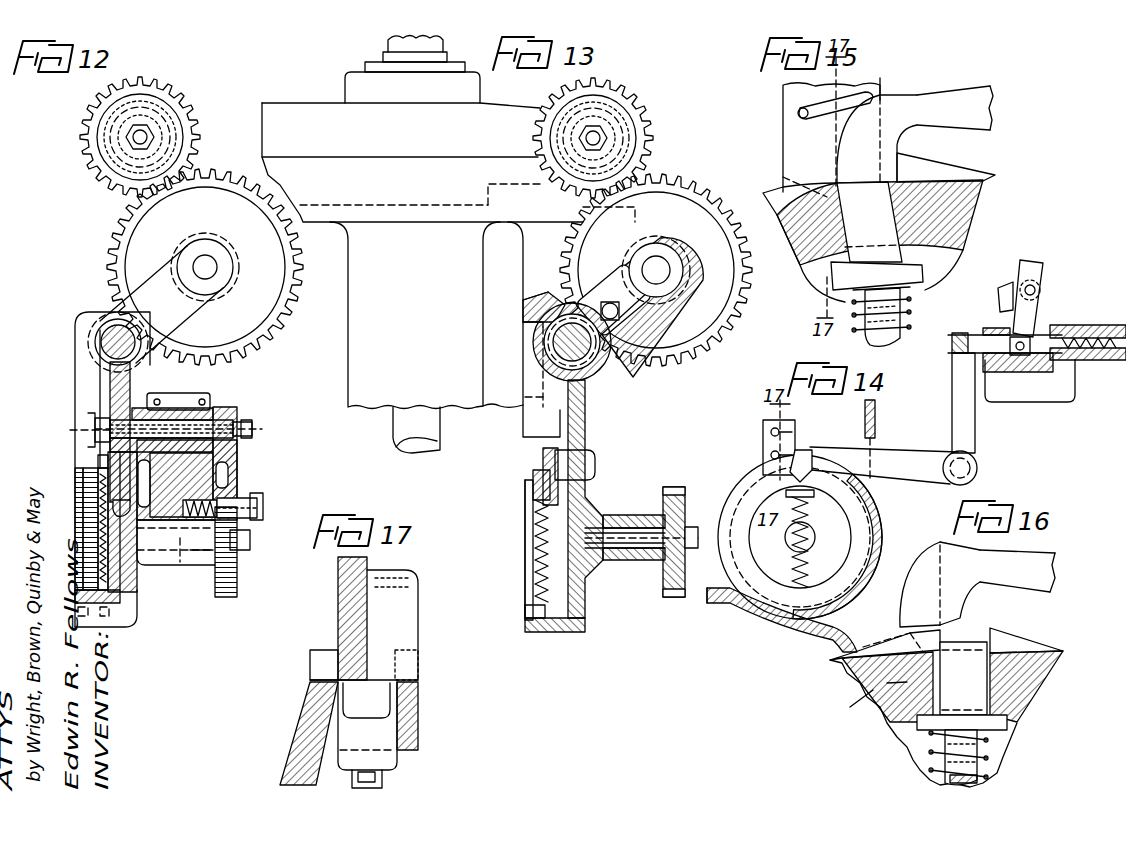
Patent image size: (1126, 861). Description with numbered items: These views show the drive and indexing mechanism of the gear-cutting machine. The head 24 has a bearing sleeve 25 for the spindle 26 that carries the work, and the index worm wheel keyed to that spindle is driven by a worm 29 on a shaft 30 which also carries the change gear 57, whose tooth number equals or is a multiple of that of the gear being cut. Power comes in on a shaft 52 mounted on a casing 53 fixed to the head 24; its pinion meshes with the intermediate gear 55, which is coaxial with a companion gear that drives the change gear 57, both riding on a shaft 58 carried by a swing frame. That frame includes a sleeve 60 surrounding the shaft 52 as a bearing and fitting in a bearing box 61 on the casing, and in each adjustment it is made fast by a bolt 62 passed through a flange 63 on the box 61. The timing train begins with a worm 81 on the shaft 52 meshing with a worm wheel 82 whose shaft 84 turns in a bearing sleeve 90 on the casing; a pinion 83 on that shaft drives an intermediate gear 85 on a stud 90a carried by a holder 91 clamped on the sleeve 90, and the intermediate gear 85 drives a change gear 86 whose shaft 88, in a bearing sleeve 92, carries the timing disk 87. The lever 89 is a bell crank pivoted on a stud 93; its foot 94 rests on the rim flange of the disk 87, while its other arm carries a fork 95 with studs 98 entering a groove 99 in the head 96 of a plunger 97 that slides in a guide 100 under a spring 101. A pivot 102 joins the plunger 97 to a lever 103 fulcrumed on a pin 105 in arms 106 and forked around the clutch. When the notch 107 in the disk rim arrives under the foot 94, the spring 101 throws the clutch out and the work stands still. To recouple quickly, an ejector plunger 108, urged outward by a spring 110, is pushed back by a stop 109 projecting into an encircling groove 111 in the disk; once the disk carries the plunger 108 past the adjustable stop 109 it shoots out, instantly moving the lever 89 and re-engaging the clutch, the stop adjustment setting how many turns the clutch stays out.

In FIG. 13, the head 24 is at (503, 280).
In FIG. 13, the bearing sleeve 25 is at (368, 318).
In FIG. 13, the spindle 26 is at (432, 432).
In FIG. 12, the worm 29 is at (114, 142).
In FIG. 13, the worm 29 is at (623, 140).
In FIG. 12, the shaft 30 is at (162, 128).
In FIG. 13, the shaft 30 is at (628, 101).
In FIG. 12, the shaft 52 is at (106, 328).
In FIG. 13, the shaft 52 is at (560, 363).
In FIG. 12, the casing 53 is at (137, 592).
In FIG. 13, the casing 53 is at (584, 503).
In FIG. 14, the casing 53 is at (778, 622).
In FIG. 12, the intermediate gear 55 is at (217, 195).
In FIG. 13, the intermediate gear 55 is at (678, 193).
In FIG. 12, the change gear 57 is at (170, 101).
In FIG. 13, the change gear 57 is at (603, 128).
In FIG. 12, the shaft 58 is at (210, 266).
In FIG. 13, the shaft 58 is at (668, 270).
In FIG. 15, the shaft 58 is at (783, 262).
In FIG. 13, the sleeve 60 is at (583, 372).
In FIG. 13, the bearing box 61 is at (628, 378).
In FIG. 13, the bolt 62 is at (636, 360).
In FIG. 13, the flange 63 is at (640, 328).
In FIG. 12, the worm 81 is at (100, 341).
In FIG. 12, the worm wheel 82 is at (110, 389).
In FIG. 12, the pinion 83 is at (233, 407).
In FIG. 12, the shaft 84 is at (181, 425).
In FIG. 12, the intermediate gear 85 is at (215, 480).
In FIG. 12, the change gear 86 is at (223, 598).
In FIG. 13, the change gear 86 is at (670, 486).
In FIG. 12, the timing disk 87 is at (80, 533).
In FIG. 13, the timing disk 87 is at (523, 474).
In FIG. 14, the timing disk 87 is at (747, 500).
In FIG. 15, the timing disk 87 is at (967, 207).
In FIG. 16, the timing disk 87 is at (1027, 688).
In FIG. 17, the timing disk 87 is at (310, 693).
In FIG. 12, the shaft 88 is at (180, 545).
In FIG. 13, the shaft 88 is at (628, 560).
In FIG. 14, the shaft 88 is at (816, 534).
In FIG. 14, the lever 89 is at (913, 467).
In FIG. 15, the lever 89 is at (973, 107).
In FIG. 16, the lever 89 is at (1038, 580).
In FIG. 12, the bearing sleeve 90 is at (173, 425).
In FIG. 12, the stud 90a is at (264, 505).
In FIG. 12, the holder 91 is at (238, 487).
In FIG. 12, the bearing sleeve 92 is at (193, 558).
In FIG. 13, the bearing sleeve 92 is at (607, 522).
In FIG. 13, the stud 93 is at (592, 463).
In FIG. 14, the stud 93 is at (978, 468).
In FIG. 12, the foot 94 is at (100, 464).
In FIG. 13, the foot 94 is at (543, 453).
In FIG. 14, the foot 94 is at (797, 446).
In FIG. 15, the foot 94 is at (877, 110).
In FIG. 16, the foot 94 is at (923, 580).
In FIG. 17, the foot 94 is at (407, 595).
In FIG. 15, the fork 95 is at (952, 366).
In FIG. 15, the head 96 is at (952, 338).
In FIG. 15, the plunger 97 is at (990, 332).
In FIG. 15, the studs 98 is at (952, 357).
In FIG. 15, the groove 99 is at (960, 332).
In FIG. 15, the guide 100 is at (1072, 326).
In FIG. 15, the spring 101 is at (1095, 360).
In FIG. 15, the pivot 102 is at (1032, 362).
In FIG. 15, the lever 103 is at (1023, 263).
In FIG. 13, the pin 105 is at (623, 253).
In FIG. 15, the pin 105 is at (1035, 288).
In FIG. 13, the arms 106 is at (622, 360).
In FIG. 15, the arms 106 is at (1003, 287).
In FIG. 14, the notch 107 is at (808, 496).
In FIG. 13, the plunger 108 is at (537, 488).
In FIG. 15, the plunger 108 is at (917, 264).
In FIG. 16, the plunger 108 is at (982, 720).
In FIG. 17, the plunger 108 is at (378, 742).
In FIG. 12, the stop 109 is at (88, 427).
In FIG. 14, the stop 109 is at (767, 442).
In FIG. 15, the stop 109 is at (805, 143).
In FIG. 17, the stop 109 is at (372, 622).
In FIG. 13, the spring 110 is at (537, 528).
In FIG. 14, the spring 110 is at (790, 524).
In FIG. 15, the spring 110 is at (910, 313).
In FIG. 16, the spring 110 is at (930, 752).
In FIG. 12, the groove 111 is at (95, 513).
In FIG. 13, the groove 111 is at (540, 612).